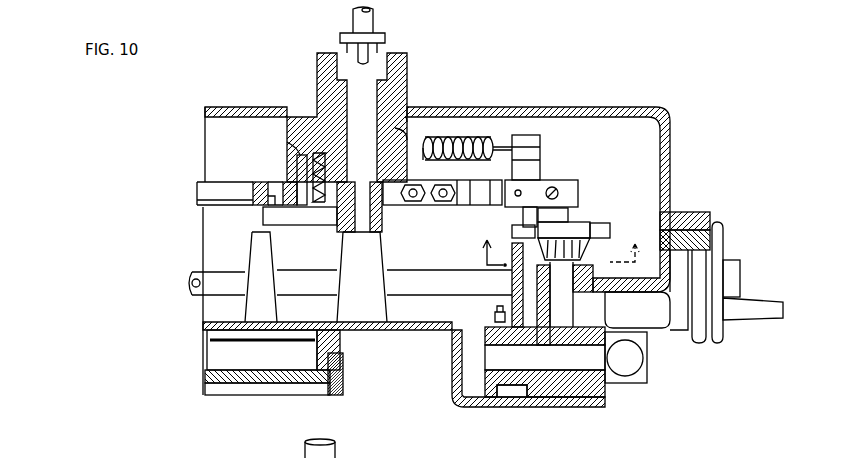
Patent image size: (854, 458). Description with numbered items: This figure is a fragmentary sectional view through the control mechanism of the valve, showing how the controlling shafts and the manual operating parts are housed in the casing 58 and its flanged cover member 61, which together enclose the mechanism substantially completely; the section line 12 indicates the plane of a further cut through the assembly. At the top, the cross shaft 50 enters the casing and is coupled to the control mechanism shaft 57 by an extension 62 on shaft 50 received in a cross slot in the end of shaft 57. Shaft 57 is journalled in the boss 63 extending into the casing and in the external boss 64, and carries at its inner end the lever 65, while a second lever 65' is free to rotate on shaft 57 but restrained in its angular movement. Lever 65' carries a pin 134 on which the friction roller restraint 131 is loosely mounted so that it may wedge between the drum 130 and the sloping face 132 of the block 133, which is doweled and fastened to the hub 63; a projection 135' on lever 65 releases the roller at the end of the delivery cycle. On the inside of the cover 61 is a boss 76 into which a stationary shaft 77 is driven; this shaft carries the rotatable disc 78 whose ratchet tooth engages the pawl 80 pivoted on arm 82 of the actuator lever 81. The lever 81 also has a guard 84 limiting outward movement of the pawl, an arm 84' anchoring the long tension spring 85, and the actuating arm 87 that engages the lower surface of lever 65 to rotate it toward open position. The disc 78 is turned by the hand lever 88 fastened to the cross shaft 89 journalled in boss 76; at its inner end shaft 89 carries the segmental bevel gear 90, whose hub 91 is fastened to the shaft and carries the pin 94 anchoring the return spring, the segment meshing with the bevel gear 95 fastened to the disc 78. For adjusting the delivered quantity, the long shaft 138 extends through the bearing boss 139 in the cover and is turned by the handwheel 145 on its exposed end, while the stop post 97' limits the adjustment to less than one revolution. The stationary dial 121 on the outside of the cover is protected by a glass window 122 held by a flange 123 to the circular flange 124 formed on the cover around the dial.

The cross shaft 50 is at (372, 11).
The extension 62 is at (366, 53).
The external boss 64 is at (317, 72).
The control mechanism shaft 57 is at (374, 93).
The boss 63 is at (395, 128).
The tension spring 85 is at (478, 137).
The casing 58 is at (672, 122).
The block 133 is at (288, 142).
The sloping face 132 is at (286, 175).
The friction roller restraint 131 is at (282, 180).
The drum 130 is at (203, 183).
The pin 134 is at (265, 206).
The stop post 97' is at (246, 277).
The lever 65' is at (300, 233).
The lever 65 is at (442, 211).
The projection 135' is at (389, 222).
The rotatable disc 78 is at (510, 232).
The guard 84 is at (502, 195).
The arm 84' is at (547, 157).
The actuator lever 81 is at (576, 178).
The actuating arm 87 is at (559, 190).
The pawl 80 is at (566, 226).
The arm 82 is at (600, 226).
The bevel gear 95 is at (582, 262).
The handwheel 145 is at (724, 238).
The long shaft 138 is at (190, 287).
The segmental bevel gear 90 is at (512, 285).
The pin 94 is at (494, 314).
The boss 76 is at (568, 306).
The stationary shaft 77 is at (643, 340).
The stationary dial 121 is at (225, 344).
The glass window 122 is at (210, 375).
The circular flange 124 is at (348, 358).
The flanged cover member 61 is at (394, 335).
The flange 123 is at (322, 396).
The bearing boss 139 is at (688, 345).
The hand lever 88 is at (633, 368).
The cross shaft 89 is at (558, 390).
The hub 91 is at (493, 400).
The section line 12 is at (560, 257).